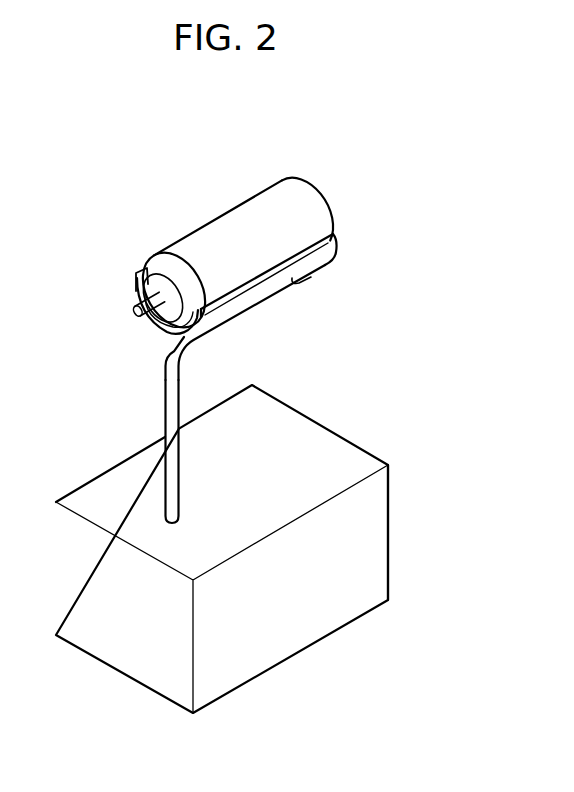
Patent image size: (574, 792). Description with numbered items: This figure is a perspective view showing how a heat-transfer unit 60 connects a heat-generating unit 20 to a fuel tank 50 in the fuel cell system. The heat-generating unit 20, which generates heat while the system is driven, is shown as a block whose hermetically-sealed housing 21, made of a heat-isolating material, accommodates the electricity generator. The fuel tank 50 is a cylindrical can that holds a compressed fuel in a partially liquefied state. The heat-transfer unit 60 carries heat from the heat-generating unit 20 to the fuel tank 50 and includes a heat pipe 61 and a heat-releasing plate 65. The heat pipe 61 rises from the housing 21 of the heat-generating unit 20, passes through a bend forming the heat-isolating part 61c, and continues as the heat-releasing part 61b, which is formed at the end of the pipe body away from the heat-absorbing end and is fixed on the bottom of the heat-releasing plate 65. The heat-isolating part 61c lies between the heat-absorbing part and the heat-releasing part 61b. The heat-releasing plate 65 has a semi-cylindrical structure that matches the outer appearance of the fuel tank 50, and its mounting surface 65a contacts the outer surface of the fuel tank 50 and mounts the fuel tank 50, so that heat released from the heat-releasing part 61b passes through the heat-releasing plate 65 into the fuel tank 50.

The fuel tank 50 is at (219, 227).
The heat-transfer unit 60 is at (239, 378).
The heat pipe 61 is at (206, 394).
The heat-releasing part 61b is at (264, 304).
The heat-isolating part 61c is at (164, 396).
The heat-releasing plate 65 is at (335, 244).
The mounting surface 65a is at (168, 331).
The heat-generating unit 20 is at (338, 431).
The housing 21 is at (389, 532).